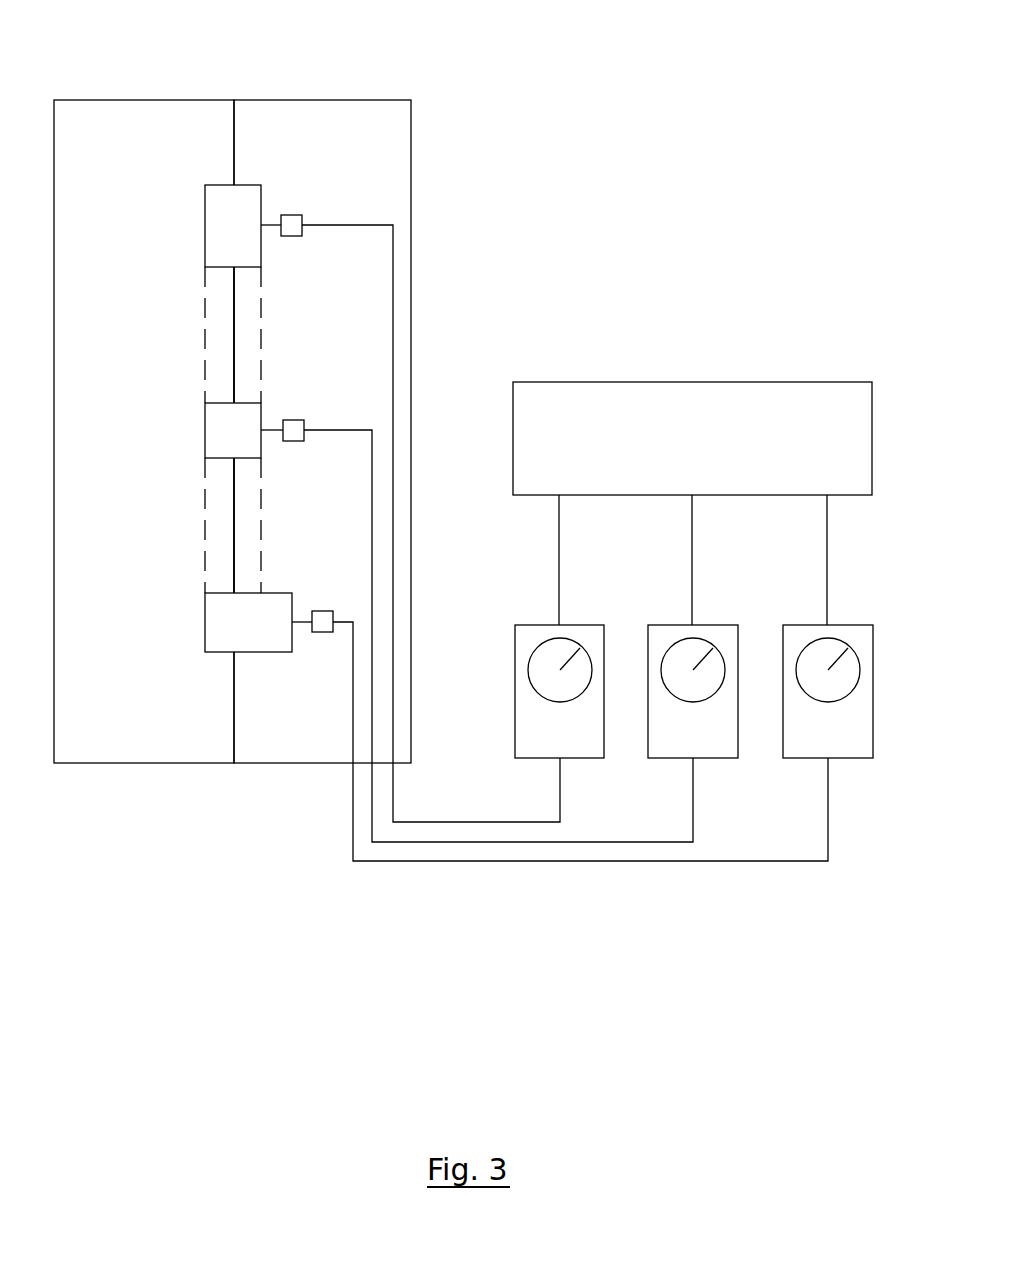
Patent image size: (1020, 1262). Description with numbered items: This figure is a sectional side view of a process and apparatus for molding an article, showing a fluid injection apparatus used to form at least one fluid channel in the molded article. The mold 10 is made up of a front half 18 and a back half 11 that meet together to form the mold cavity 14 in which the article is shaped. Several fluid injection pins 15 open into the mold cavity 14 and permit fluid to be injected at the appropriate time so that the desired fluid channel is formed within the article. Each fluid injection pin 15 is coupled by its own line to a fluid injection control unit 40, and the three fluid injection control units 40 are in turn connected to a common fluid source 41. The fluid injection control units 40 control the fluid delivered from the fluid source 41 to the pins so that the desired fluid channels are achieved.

The mold 10 is at (180, 788).
The back half 11 is at (293, 100).
The mold cavity 14 is at (278, 176).
The fluid injection pin 15 is at (318, 209).
The front half 18 is at (170, 100).
The fluid injection control unit 40 is at (578, 758).
The fluid source 41 is at (705, 466).